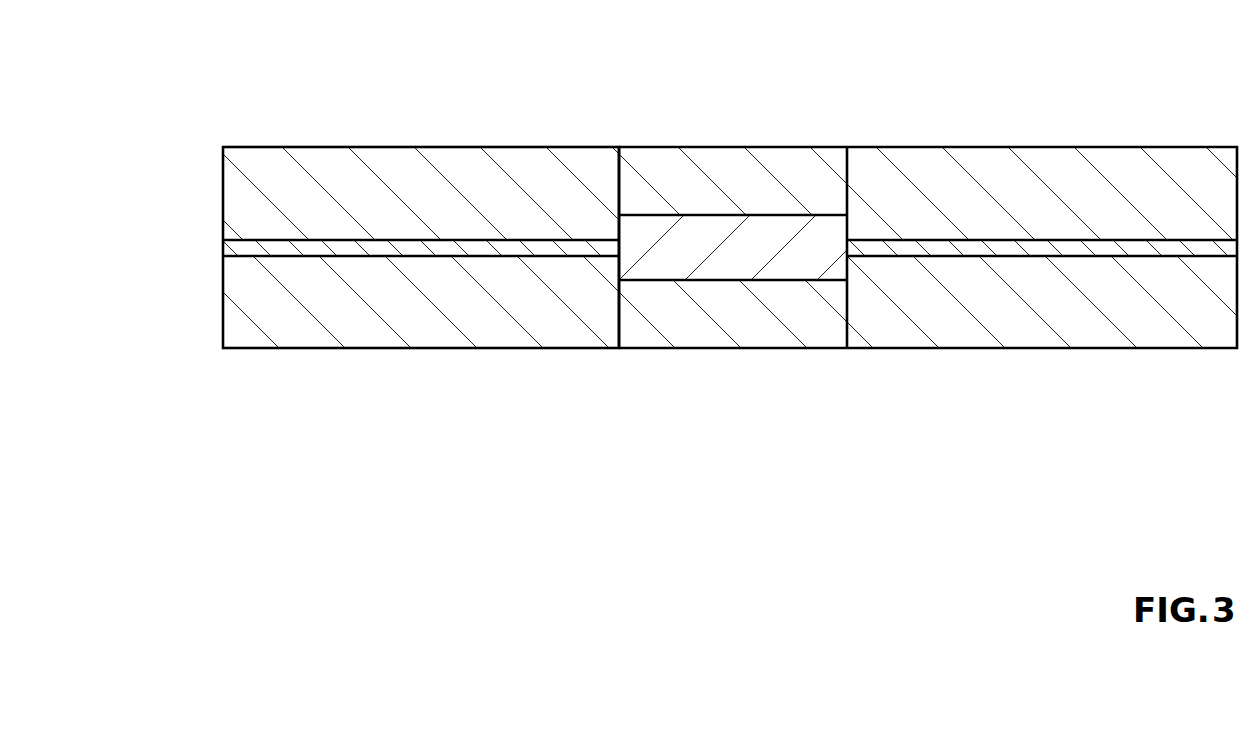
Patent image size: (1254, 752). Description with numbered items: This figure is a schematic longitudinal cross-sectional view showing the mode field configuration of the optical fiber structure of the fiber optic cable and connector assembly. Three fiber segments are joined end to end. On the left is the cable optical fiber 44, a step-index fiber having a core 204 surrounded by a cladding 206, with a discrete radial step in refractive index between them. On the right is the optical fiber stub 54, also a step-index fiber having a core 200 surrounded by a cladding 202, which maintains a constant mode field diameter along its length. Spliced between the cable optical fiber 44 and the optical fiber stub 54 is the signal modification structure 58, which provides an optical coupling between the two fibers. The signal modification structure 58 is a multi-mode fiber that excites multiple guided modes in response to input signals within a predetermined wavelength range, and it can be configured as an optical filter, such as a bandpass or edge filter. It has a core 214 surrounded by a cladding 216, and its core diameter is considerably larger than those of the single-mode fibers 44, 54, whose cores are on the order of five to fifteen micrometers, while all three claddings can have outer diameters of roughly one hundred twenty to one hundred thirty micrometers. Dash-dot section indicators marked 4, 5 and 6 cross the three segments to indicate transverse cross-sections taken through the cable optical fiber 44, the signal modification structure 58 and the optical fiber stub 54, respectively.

The cable optical fiber 44 is at (530, 147).
The signal modification structure 58 is at (802, 147).
The optical fiber stub 54 is at (973, 147).
The core 200 is at (1177, 239).
The cladding 202 is at (1167, 349).
The core 204 is at (230, 256).
The cladding 206 is at (312, 349).
The core 214 is at (636, 281).
The cladding 216 is at (687, 349).
The section line 4- 4 is at (398, 138).
The section line 5- 5 is at (704, 138).
The section line 6- 6 is at (1030, 138).